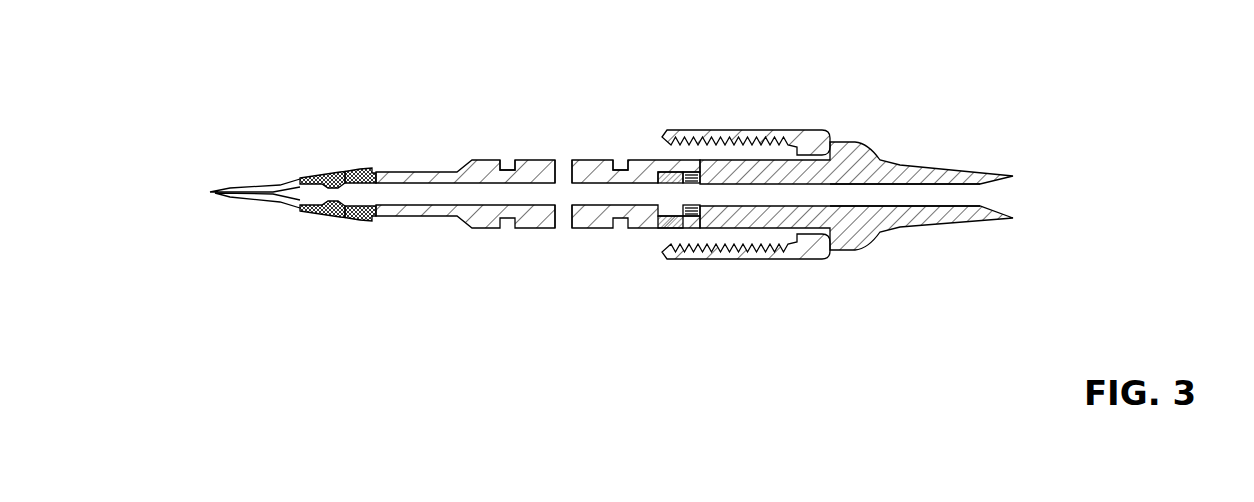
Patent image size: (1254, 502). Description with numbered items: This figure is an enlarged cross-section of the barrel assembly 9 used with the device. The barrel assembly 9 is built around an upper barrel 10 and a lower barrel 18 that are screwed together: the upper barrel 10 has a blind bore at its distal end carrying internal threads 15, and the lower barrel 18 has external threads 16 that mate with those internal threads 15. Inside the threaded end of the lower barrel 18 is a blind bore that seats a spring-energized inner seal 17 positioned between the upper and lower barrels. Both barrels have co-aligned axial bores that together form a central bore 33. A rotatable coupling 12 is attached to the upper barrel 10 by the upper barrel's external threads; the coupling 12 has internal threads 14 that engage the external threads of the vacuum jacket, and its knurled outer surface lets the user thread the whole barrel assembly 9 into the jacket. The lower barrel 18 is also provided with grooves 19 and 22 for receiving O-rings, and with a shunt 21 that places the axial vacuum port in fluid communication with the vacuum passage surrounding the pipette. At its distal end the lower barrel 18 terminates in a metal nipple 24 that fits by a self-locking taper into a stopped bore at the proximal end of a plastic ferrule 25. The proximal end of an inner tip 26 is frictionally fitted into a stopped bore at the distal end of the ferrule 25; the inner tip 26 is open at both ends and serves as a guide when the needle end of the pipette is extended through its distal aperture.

The barrel assembly 9 is at (618, 208).
The upper barrel 10 is at (856, 155).
The rotatable coupling 12 is at (746, 80).
The internal threads 14 is at (746, 276).
The internal threads 15 is at (603, 260).
The external threads 16 is at (686, 122).
The inner seal 17 is at (598, 278).
The lower barrel 18 is at (465, 261).
The groove 19 is at (566, 88).
The shunt 21 is at (522, 143).
The groove 22 is at (468, 138).
The metal nipple 24 is at (321, 130).
The ferrule 25 is at (289, 150).
The inner tip 26 is at (249, 166).
The central bore 33 is at (934, 152).